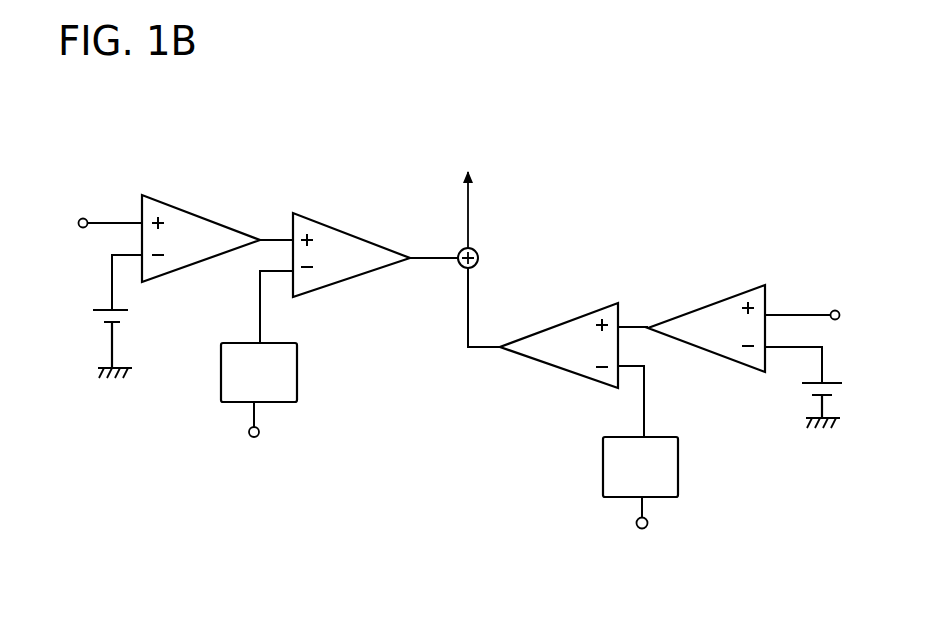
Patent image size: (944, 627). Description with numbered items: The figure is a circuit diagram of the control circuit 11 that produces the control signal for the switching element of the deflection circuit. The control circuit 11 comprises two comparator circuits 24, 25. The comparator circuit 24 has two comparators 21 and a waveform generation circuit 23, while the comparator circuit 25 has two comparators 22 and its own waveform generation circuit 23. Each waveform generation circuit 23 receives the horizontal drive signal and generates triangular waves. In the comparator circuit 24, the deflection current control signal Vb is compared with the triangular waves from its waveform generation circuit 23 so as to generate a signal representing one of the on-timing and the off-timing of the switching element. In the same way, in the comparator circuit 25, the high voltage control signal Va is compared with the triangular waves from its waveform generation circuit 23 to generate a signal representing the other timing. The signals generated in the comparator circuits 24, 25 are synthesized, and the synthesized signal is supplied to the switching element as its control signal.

The control circuit 11 is at (458, 360).
The comparators 21 is at (197, 212).
The comparators 22 is at (574, 310).
The waveform generation circuit 23 is at (297, 372).
The comparator circuit 24 is at (284, 277).
The comparator circuit 25 is at (632, 364).